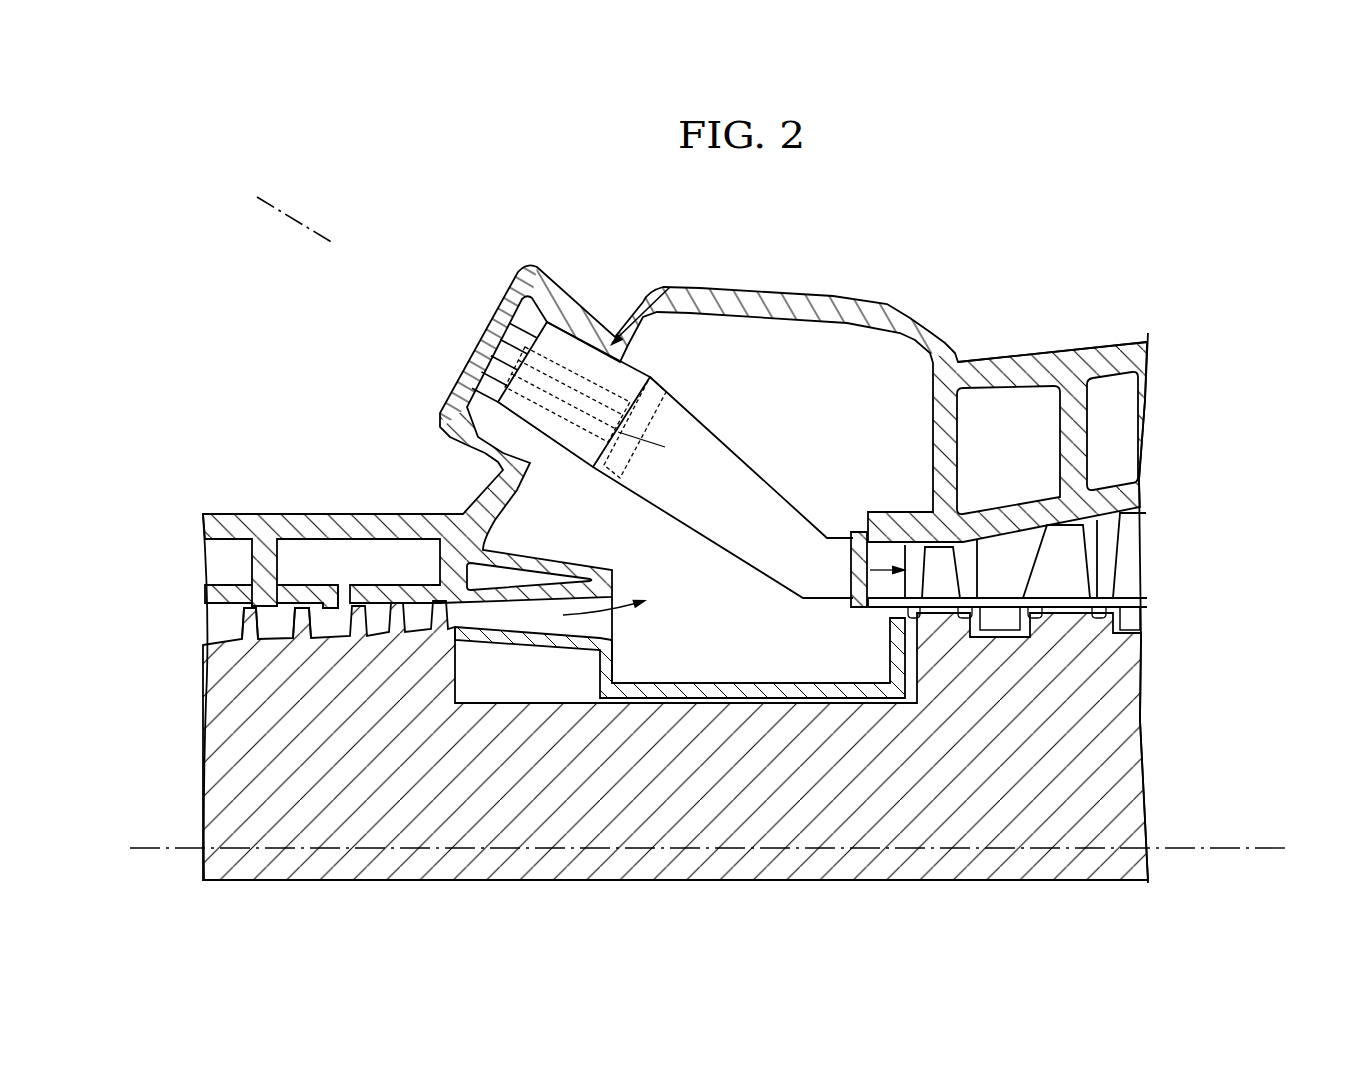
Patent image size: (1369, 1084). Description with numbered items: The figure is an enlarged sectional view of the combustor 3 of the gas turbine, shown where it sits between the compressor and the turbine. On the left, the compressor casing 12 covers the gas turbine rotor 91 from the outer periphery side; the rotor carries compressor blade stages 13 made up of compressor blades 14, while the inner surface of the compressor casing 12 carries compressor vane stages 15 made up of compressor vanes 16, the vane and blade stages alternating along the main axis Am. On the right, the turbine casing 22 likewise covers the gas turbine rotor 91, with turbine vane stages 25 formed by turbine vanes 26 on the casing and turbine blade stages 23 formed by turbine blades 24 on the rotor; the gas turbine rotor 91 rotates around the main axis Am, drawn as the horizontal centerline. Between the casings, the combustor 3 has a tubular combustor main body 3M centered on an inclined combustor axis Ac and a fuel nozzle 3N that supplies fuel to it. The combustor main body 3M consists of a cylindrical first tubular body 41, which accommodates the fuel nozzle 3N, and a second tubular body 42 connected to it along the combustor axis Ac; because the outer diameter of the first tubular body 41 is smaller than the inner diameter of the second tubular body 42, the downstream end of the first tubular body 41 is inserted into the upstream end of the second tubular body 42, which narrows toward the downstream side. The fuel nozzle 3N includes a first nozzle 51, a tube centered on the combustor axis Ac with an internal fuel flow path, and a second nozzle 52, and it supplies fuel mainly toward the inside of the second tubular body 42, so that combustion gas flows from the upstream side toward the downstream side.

The combustor 3 is at (947, 238).
The fuel nozzle 3N is at (570, 384).
The first nozzle 51 is at (568, 366).
The second nozzle 52 is at (568, 366).
The first tubular body 41 is at (655, 367).
The combustor main body 3M is at (737, 433).
The second tubular body 42 is at (778, 490).
The turbine casing 22 is at (1073, 368).
The compressor casing 12 is at (267, 547).
The compressor vane stages 15 is at (275, 612).
The compressor vanes 16 is at (328, 612).
The compressor blade stages 13 is at (250, 630).
The compressor blades 14 is at (302, 634).
The gas turbine rotor 91 is at (233, 713).
The turbine vane stages 25 is at (1003, 573).
The turbine vanes 26 is at (1125, 567).
The turbine blade stages 23 is at (1077, 585).
The turbine blades 24 is at (940, 592).
The combustor axis Ac is at (273, 207).
The main axis Am is at (1285, 847).